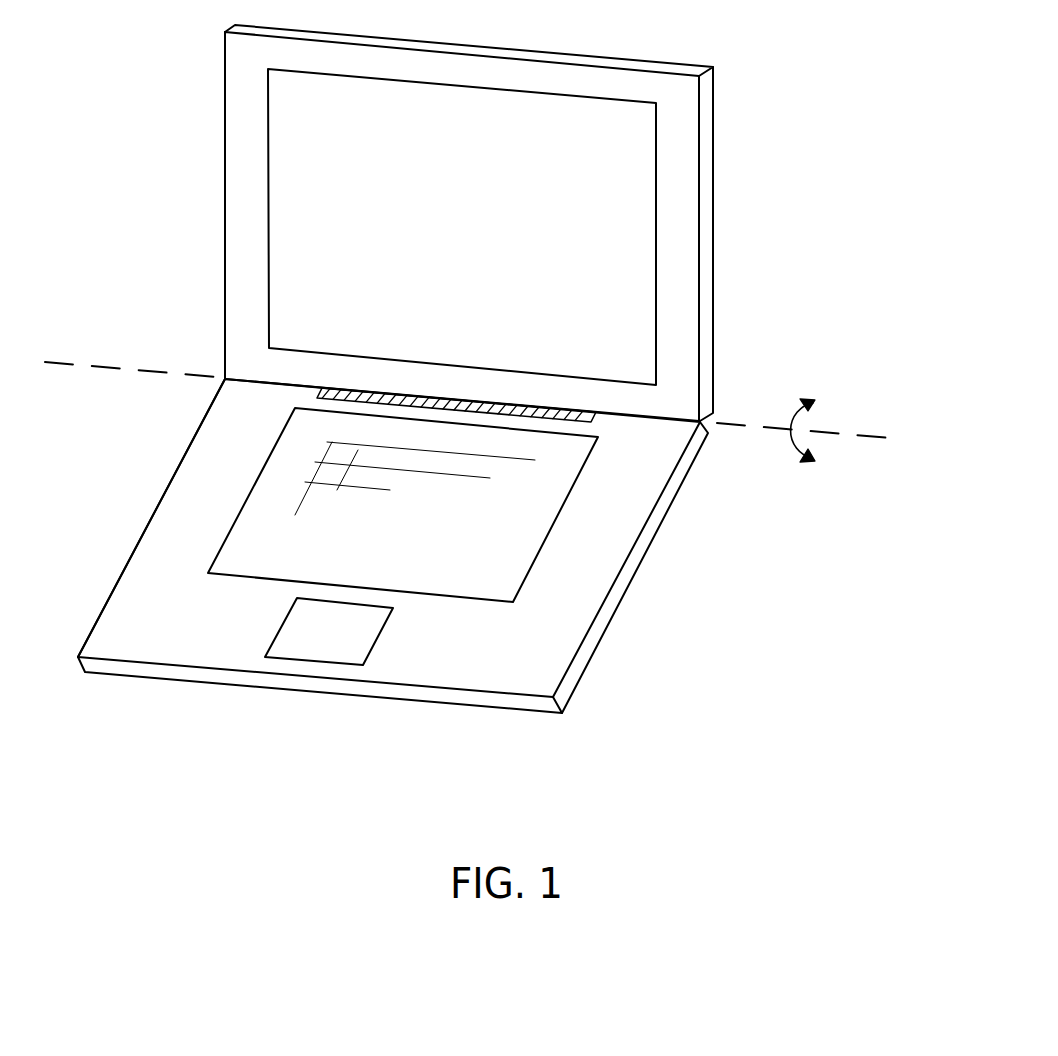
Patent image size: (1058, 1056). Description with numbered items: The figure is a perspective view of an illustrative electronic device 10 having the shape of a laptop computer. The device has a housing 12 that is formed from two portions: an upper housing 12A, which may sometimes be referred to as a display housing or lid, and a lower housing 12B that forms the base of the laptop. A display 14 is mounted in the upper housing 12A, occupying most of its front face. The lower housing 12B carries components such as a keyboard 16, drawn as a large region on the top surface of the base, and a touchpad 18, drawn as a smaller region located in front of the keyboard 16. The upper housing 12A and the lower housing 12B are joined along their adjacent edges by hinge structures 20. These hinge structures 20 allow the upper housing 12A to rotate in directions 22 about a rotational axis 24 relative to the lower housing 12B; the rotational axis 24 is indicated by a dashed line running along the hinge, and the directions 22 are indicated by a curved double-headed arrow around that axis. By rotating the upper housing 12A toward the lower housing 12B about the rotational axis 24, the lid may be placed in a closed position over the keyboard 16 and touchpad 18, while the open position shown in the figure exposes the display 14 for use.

The electronic device 10 is at (795, 64).
The housing 12 is at (713, 350).
The upper housing 12A is at (212, 38).
The lower housing 12B is at (202, 383).
The display 14 is at (617, 214).
The keyboard 16 is at (557, 525).
The touchpad 18 is at (380, 640).
The hinge structures 20 is at (568, 406).
The directions 22 is at (785, 463).
The rotational axis 24 is at (97, 363).